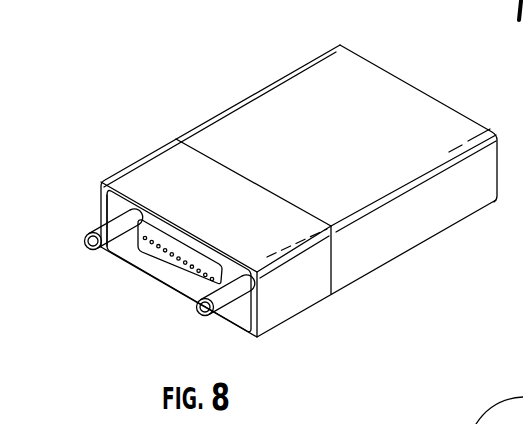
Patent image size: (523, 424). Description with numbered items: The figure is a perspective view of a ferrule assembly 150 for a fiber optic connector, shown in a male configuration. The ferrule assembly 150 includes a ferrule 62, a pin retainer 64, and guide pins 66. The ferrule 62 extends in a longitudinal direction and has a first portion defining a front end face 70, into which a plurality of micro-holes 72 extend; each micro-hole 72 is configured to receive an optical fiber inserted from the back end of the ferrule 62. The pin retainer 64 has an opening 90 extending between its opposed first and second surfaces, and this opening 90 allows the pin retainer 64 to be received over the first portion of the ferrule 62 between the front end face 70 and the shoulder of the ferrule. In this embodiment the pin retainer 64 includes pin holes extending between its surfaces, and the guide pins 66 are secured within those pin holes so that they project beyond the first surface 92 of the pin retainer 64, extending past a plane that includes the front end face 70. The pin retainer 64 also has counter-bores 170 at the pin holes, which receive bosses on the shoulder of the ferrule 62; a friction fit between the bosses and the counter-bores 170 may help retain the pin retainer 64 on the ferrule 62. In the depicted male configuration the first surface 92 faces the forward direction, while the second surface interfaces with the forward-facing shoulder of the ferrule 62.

The ferrule assembly 150 is at (135, 95).
The ferrule 62 is at (240, 100).
The pin retainer 64 is at (115, 168).
The first surface 92 is at (97, 214).
The counter-bores 170 is at (112, 202).
The guide pins 66 is at (84, 241).
The front end face 70 is at (148, 254).
The micro-holes 72 is at (167, 252).
The opening 90 is at (192, 264).